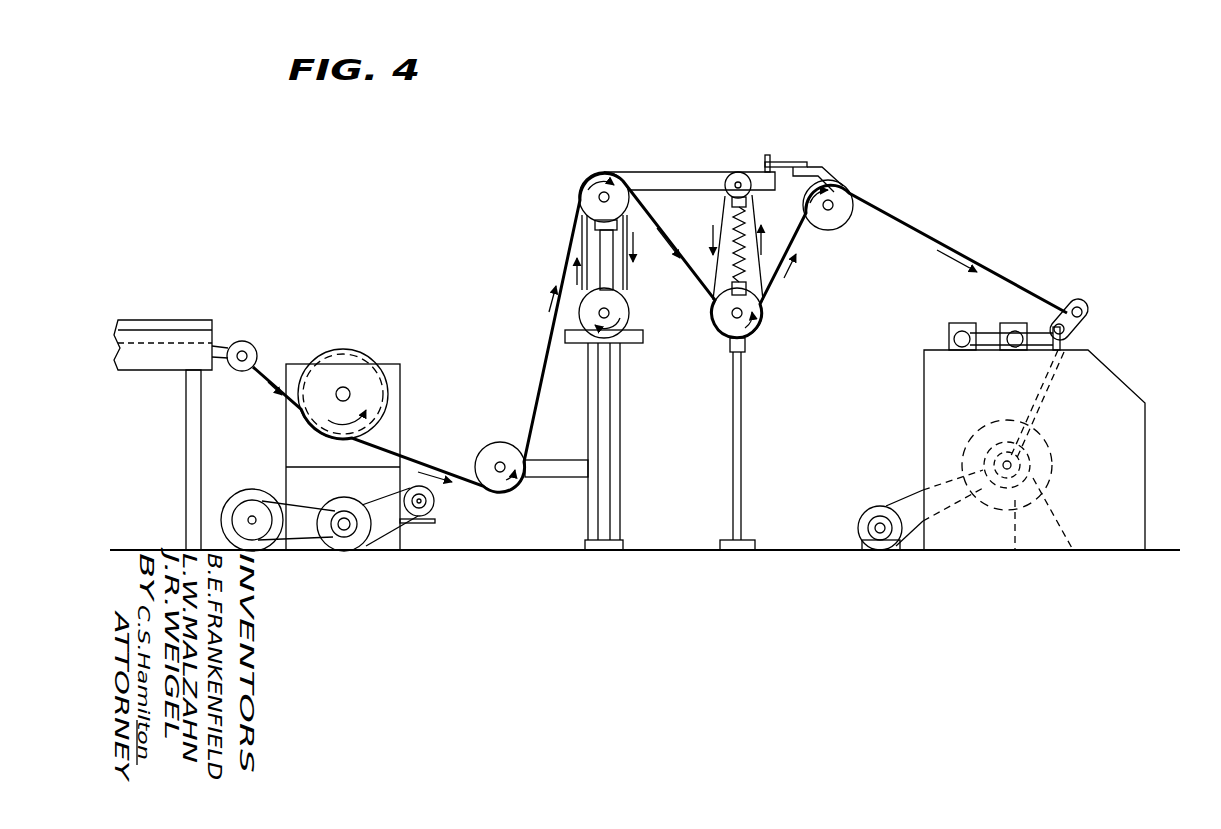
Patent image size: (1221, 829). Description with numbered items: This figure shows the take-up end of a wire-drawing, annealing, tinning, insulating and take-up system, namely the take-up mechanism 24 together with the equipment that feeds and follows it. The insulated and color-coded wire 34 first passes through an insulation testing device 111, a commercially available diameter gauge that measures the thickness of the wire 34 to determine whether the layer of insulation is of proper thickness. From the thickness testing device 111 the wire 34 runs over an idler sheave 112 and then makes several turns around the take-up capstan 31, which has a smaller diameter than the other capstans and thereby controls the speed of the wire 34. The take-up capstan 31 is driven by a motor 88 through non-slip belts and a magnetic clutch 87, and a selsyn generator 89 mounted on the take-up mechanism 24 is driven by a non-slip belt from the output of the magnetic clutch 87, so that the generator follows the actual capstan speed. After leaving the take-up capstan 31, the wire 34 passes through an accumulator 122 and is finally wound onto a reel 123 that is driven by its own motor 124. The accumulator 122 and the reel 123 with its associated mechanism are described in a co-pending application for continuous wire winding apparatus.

The feed hopper 111 is at (180, 322).
The guide pulley 112 is at (245, 342).
The frame 24 is at (378, 357).
The roller 31 is at (335, 366).
The drive pulley 88 is at (251, 493).
The pulley 87 is at (344, 503).
The pulley 89 is at (436, 503).
The web 34 is at (541, 365).
The accumulator assembly 122 is at (688, 171).
The wind-up roll 123 is at (963, 460).
The drive pulley 124 is at (860, 511).